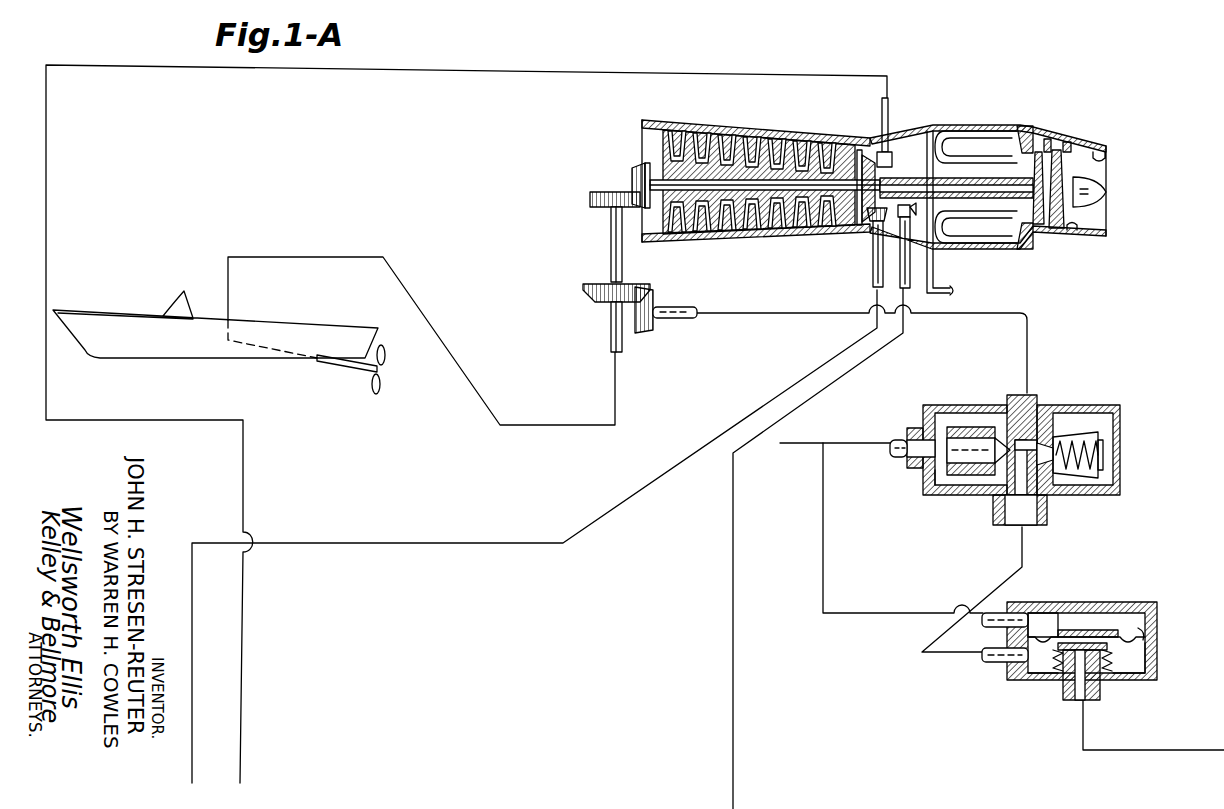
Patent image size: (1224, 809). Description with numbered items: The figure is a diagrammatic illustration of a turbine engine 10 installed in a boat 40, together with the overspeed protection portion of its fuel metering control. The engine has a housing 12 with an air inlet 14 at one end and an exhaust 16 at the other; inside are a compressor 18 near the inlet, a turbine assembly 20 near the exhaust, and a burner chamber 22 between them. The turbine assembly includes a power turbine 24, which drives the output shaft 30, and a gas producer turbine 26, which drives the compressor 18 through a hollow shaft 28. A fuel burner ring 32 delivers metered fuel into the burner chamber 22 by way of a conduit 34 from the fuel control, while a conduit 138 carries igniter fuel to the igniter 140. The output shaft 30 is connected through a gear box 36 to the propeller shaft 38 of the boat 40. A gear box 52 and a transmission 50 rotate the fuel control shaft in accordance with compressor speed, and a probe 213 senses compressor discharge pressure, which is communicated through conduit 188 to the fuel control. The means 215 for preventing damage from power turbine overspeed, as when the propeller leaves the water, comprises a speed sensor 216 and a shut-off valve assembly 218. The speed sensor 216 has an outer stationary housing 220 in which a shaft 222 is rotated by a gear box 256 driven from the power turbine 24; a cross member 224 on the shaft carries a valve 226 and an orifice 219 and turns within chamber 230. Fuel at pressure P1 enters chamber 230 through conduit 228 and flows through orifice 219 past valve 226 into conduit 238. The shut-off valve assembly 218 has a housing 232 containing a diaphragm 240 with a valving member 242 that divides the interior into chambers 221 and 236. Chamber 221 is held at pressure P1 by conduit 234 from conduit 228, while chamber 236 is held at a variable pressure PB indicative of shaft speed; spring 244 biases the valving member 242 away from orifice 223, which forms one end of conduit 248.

The turbine engine 10 is at (837, 210).
The housing 12 is at (760, 128).
The air inlet 14 is at (642, 136).
The exhaust 16 is at (1108, 166).
The compressor 18 is at (760, 238).
The turbine assembly 20 is at (1066, 146).
The burner chamber 22 is at (988, 245).
The power turbine 24 is at (1108, 212).
The gas producer turbine 26 is at (1037, 150).
The hollow shaft 28 is at (948, 250).
The output shaft 30 is at (645, 172).
The fuel burner ring 32 is at (922, 130).
The conduit 34 is at (962, 293).
The gear box 36 is at (585, 196).
The propeller shaft 38 is at (330, 367).
The boat 40 is at (219, 335).
The transmission 50 is at (442, 540).
The gear box 52 is at (868, 228).
The conduit 138 is at (733, 678).
The igniter 140 is at (876, 268).
The conduit 188 is at (245, 456).
The probe 213 is at (878, 150).
The means for preventing engine damage due to power turbine overspeed 215 is at (1018, 645).
The speed sensor 216 is at (1032, 439).
The shut-off valve assembly 218 is at (1058, 700).
The orifice 219 is at (1082, 435).
The outer stationary housing 220 is at (950, 405).
The chamber 221 is at (1040, 620).
The shaft 222 is at (1030, 395).
The orifice 223 is at (1090, 632).
The cross member 224 is at (980, 478).
The valve 226 is at (1042, 440).
The conduit 228 is at (815, 443).
The chamber 230 is at (1125, 432).
The housing 232 is at (1082, 605).
The conduit 234 is at (823, 582).
The chamber 236 is at (1140, 658).
The conduit 238 is at (1002, 575).
The diaphragm 240 is at (1152, 645).
The valving member 242 is at (1150, 630).
The spring 244 is at (1112, 672).
The conduit 248 is at (1090, 728).
The gear box 256 is at (652, 338).
The pressure P1 is at (909, 490).
The variable pressure PB is at (1016, 698).